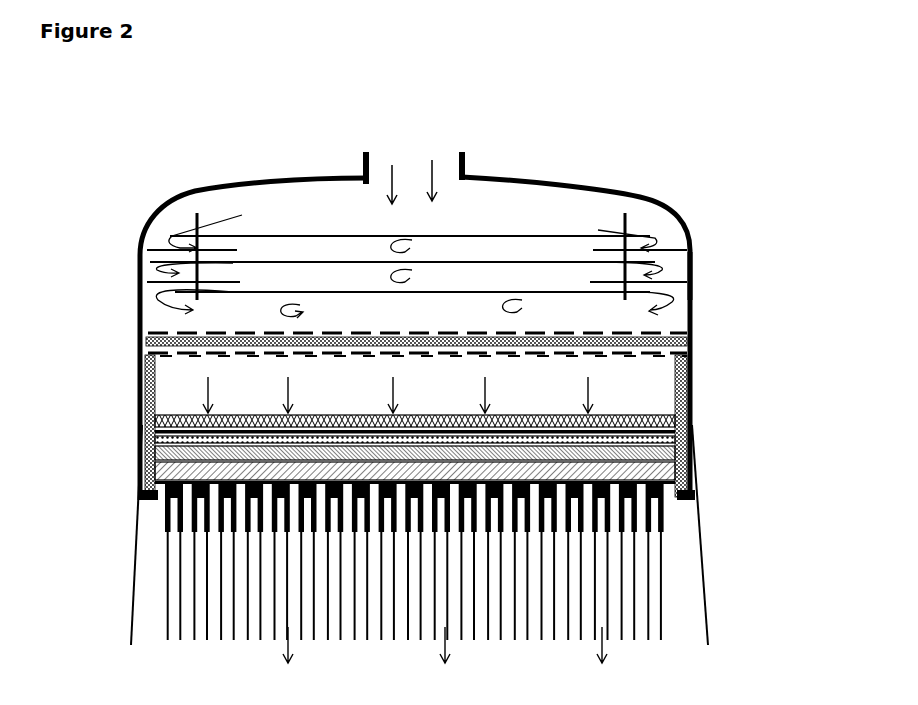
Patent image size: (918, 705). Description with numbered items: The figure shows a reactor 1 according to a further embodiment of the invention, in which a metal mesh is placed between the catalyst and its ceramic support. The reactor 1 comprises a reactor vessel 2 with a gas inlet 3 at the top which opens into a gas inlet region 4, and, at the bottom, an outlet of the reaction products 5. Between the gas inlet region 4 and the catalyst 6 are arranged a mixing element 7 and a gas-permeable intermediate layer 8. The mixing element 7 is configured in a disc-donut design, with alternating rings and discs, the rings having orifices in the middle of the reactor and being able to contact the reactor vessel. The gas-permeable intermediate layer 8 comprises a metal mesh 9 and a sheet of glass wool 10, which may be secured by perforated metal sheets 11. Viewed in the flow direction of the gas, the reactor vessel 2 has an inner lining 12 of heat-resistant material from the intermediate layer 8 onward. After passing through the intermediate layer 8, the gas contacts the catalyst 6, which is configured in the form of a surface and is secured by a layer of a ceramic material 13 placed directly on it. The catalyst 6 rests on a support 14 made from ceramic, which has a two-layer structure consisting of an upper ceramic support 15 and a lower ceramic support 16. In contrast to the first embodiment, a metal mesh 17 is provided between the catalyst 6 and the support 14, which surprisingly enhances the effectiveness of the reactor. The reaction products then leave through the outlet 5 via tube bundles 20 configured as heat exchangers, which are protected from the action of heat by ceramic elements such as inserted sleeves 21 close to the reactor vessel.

The reactor 1 is at (680, 193).
The reactor vessel 2 is at (693, 290).
The gas inlet 3 is at (442, 158).
The gas inlet region 4 is at (343, 210).
The outlet of the reaction products 5 is at (428, 561).
The catalyst 6 is at (697, 422).
The mixing element 7 is at (270, 248).
The gas-permeable intermediate layer 8 is at (693, 335).
The metal mesh 9 is at (143, 368).
The sheet of glass wool 10 is at (148, 342).
The perforated metal sheets 11 is at (185, 333).
The inner lining 12 is at (693, 380).
The layer of a ceramic material 13 is at (693, 405).
The support 14 is at (693, 460).
The upper ceramic support 15 is at (200, 450).
The lower ceramic support 16 is at (195, 478).
The metal mesh 17 is at (697, 441).
The tube bundles 20 is at (205, 535).
The inserted sleeves 21 is at (158, 497).